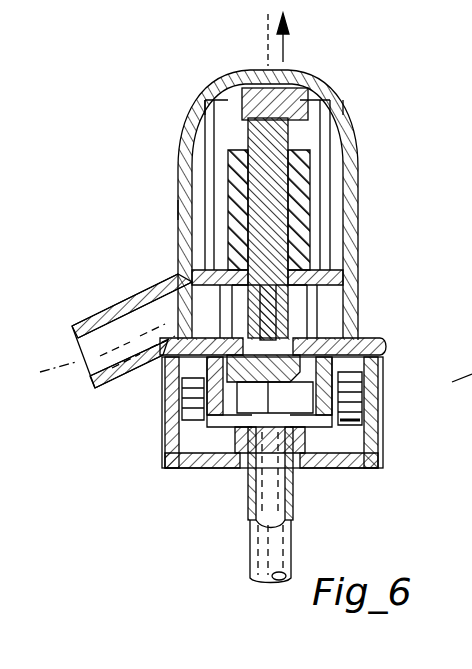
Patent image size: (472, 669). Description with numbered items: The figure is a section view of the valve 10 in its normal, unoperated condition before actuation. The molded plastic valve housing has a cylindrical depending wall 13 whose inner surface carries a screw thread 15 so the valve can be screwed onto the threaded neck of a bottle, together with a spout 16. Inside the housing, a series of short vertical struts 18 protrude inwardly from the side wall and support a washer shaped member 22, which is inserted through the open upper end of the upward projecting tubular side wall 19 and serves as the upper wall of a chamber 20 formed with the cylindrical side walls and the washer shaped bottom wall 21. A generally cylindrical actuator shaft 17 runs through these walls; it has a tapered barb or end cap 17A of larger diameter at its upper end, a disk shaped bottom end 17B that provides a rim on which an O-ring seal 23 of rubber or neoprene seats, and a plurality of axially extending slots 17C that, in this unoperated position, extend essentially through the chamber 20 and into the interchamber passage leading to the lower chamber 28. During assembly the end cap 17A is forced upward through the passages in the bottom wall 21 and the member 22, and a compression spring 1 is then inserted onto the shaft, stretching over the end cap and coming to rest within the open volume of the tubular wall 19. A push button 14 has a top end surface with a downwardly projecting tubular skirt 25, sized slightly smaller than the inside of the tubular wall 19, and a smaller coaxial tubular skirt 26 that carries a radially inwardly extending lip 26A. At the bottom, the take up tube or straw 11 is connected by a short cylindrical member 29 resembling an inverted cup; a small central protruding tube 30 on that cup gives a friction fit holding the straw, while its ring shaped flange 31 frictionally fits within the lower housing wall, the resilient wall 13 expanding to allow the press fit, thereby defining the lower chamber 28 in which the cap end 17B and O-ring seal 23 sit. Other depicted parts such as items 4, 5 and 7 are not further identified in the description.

The compression spring 1 is at (325, 228).
The tapered valve guide 4 is at (177, 247).
The inner wall 5 is at (343, 140).
The partition plate 7 is at (174, 280).
The valve 10 is at (165, 190).
The take up tube or straw 11 is at (251, 541).
The cylindrical depending wall 13 is at (165, 420).
The push button 14 is at (229, 72).
The screw thread 15 is at (162, 447).
The spout 16 is at (77, 372).
The actuator rod or shaft 17 is at (284, 197).
The tapered barb or end cap 17A is at (292, 84).
The disk shaped bottom end 17B is at (320, 468).
The axially extending slots 17C is at (283, 335).
The vertical struts 18 is at (287, 313).
The upward projecting tubular side wall 19 is at (178, 208).
The chamber 20 is at (150, 306).
The bottom wall 21 is at (380, 355).
The washer shaped member 22 is at (340, 274).
The O-ring seal 23 is at (336, 392).
The tubular skirt 25 is at (342, 108).
The tubular skirt 26 is at (213, 112).
The radially inwardly extending lip or flange 26A is at (192, 132).
The lower chamber 28 is at (346, 413).
The short cylindrical member 29 is at (215, 468).
The central protruding tube 30 is at (297, 473).
The ring shaped flange 31 is at (162, 371).